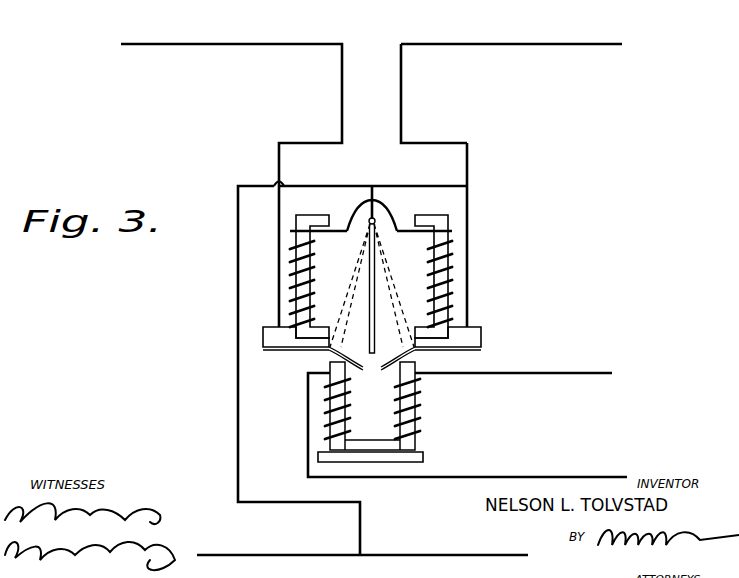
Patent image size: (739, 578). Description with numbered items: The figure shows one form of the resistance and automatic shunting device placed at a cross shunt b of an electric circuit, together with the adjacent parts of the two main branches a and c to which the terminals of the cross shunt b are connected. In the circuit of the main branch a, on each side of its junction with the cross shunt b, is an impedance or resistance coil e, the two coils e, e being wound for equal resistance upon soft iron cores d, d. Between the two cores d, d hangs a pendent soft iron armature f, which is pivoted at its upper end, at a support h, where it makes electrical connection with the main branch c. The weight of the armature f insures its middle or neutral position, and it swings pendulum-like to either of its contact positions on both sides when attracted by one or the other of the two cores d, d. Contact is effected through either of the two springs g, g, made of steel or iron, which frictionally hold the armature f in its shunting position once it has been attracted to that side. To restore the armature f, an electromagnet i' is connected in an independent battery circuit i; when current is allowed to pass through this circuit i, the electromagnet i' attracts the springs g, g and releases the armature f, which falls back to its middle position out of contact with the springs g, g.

The main branch a is at (371, 114).
The cross shunt b is at (236, 286).
The main branch c is at (362, 542).
The soft iron core d is at (318, 214).
The resistance coil e is at (312, 288).
The armature f is at (372, 285).
The spring g is at (292, 348).
The pivot support h is at (375, 216).
The independent battery circuit i is at (467, 413).
The electromagnet i' is at (370, 432).